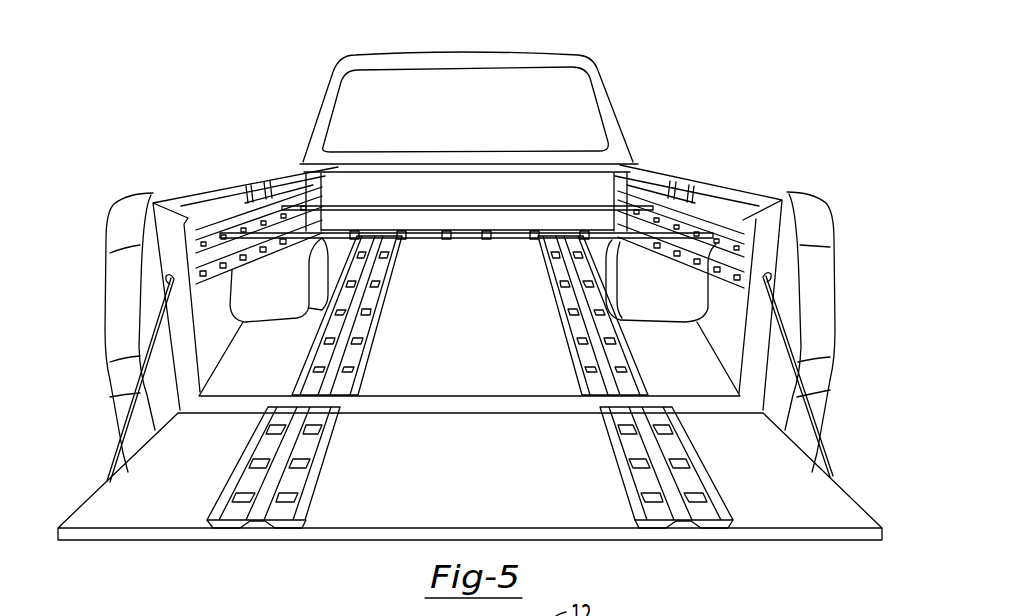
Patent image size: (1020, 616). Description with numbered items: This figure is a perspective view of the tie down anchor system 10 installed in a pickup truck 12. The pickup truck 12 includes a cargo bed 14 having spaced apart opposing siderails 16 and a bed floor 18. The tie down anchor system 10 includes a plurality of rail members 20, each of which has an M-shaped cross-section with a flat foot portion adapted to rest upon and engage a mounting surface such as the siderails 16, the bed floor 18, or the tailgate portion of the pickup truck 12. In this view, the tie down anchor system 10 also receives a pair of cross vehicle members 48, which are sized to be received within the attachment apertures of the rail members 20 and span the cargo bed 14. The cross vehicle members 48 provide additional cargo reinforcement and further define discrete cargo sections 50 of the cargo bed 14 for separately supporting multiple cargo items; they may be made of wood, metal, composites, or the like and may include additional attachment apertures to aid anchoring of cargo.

The tie down anchor system 10 is at (731, 73).
The pickup truck 12 is at (539, 54).
The cargo bed 14 is at (293, 153).
The siderails 16 is at (170, 190).
The bed floor 18 is at (482, 369).
The rail members 20 is at (553, 305).
The cross vehicle members 48 is at (470, 206).
The cargo sections 50 is at (688, 269).